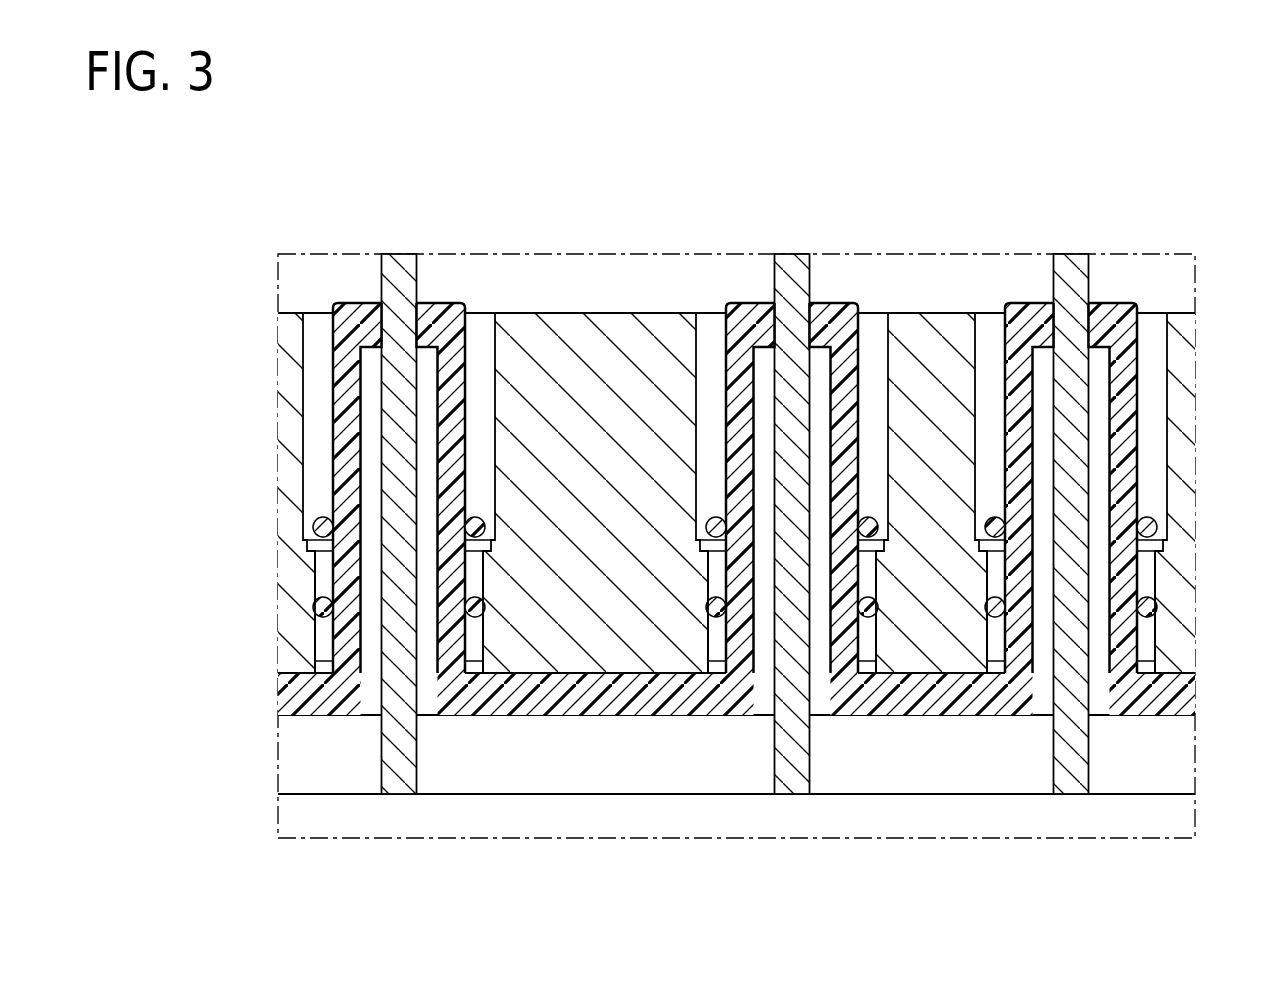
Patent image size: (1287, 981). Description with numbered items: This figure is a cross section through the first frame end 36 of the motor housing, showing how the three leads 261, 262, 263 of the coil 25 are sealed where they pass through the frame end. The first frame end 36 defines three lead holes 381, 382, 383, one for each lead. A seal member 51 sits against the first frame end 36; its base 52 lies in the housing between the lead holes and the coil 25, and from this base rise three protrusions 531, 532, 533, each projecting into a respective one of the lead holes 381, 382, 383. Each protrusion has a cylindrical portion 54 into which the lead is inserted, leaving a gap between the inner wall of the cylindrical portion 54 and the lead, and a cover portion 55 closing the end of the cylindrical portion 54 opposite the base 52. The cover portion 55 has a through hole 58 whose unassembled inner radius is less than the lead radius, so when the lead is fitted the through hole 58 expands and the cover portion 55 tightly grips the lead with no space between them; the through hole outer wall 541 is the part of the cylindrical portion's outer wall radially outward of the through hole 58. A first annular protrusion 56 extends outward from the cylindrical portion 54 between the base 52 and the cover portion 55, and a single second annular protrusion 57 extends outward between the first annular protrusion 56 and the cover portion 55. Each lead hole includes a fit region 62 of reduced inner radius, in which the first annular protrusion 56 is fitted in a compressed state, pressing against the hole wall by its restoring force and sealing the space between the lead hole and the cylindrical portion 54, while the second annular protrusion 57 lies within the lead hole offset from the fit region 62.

The coil 25 is at (1172, 794).
The first frame end 36 is at (567, 325).
The seal member 51 is at (507, 722).
The base 52 is at (585, 700).
The cylindrical portion 54 is at (345, 403).
The through hole outer wall 541 is at (335, 325).
The cover portion 55 is at (368, 306).
The first annular protrusion 56 is at (315, 610).
The second annular protrusion 57 is at (316, 527).
The through hole 58 is at (392, 308).
The fit region 62 is at (315, 640).
The lead 261 is at (398, 262).
The lead 262 is at (790, 262).
The lead 263 is at (1070, 262).
The lead hole 381 is at (303, 470).
The lead hole 382 is at (712, 448).
The lead hole 383 is at (1162, 443).
The protrusion 531 is at (442, 303).
The protrusion 532 is at (833, 303).
The protrusion 533 is at (1115, 303).